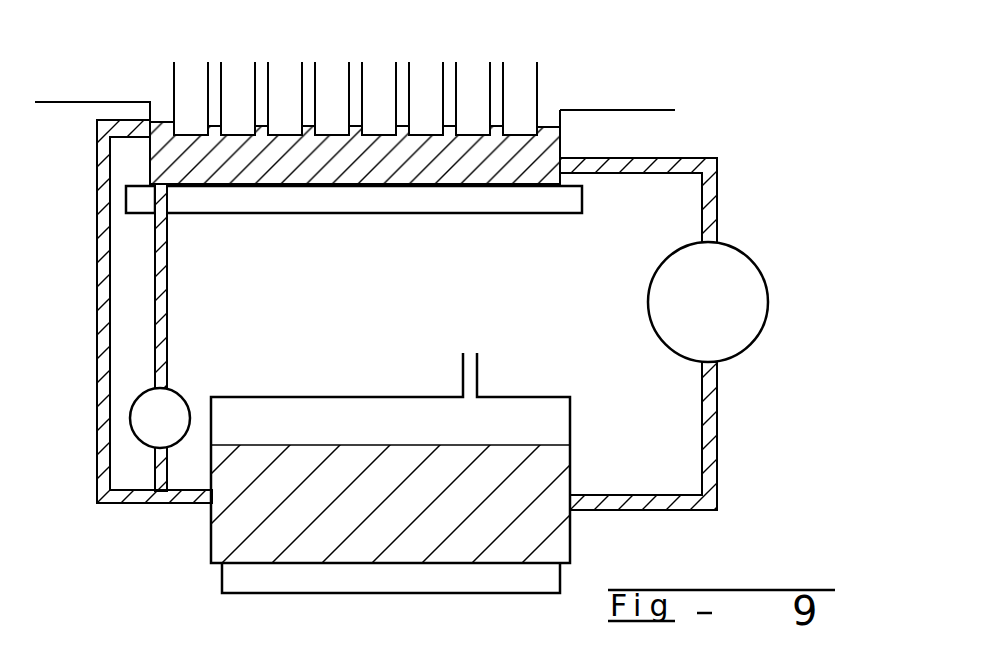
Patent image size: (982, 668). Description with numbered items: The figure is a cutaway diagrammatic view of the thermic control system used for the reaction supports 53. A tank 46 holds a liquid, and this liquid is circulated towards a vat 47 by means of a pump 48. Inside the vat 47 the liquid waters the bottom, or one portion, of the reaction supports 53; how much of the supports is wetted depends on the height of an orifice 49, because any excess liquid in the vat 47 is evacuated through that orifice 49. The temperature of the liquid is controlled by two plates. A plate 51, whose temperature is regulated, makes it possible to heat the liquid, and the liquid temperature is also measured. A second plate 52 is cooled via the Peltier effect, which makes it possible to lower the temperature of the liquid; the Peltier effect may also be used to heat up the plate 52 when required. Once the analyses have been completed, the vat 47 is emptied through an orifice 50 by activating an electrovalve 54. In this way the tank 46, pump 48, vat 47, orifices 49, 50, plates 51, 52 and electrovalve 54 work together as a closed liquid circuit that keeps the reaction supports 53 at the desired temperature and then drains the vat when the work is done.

The tank 46 is at (560, 467).
The vat 47 is at (562, 133).
The pump 48 is at (753, 263).
The orifice 49 is at (143, 130).
The orifice 50 is at (160, 186).
The plate 51 is at (437, 200).
The plate 52 is at (483, 577).
The reaction supports 53 is at (533, 77).
The electrovalve 54 is at (177, 393).